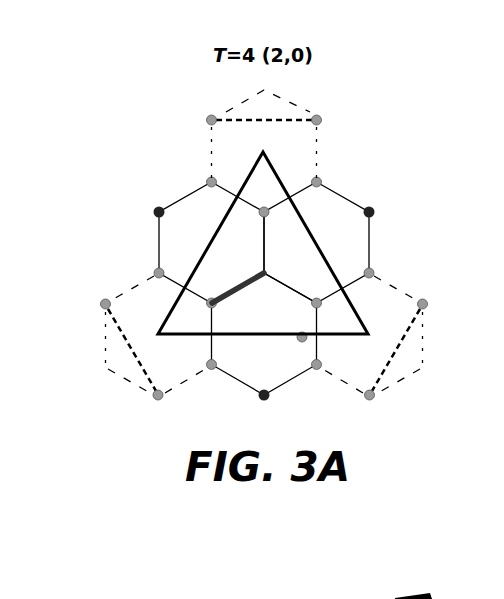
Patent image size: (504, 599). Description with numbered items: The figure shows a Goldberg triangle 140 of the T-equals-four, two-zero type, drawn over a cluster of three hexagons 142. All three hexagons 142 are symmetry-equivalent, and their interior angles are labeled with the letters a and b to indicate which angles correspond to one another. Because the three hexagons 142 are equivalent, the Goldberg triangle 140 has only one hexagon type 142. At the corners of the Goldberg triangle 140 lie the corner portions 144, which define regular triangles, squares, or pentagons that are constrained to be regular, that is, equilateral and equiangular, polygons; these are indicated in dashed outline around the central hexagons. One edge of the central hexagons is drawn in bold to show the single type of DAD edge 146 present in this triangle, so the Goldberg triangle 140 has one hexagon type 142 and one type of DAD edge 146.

The T=4 (2,0) Goldberg triangle 140 is at (287, 173).
The 6 gon 142 is at (192, 208).
The corner portion 144 is at (258, 172).
The DAD edge 146 is at (238, 290).